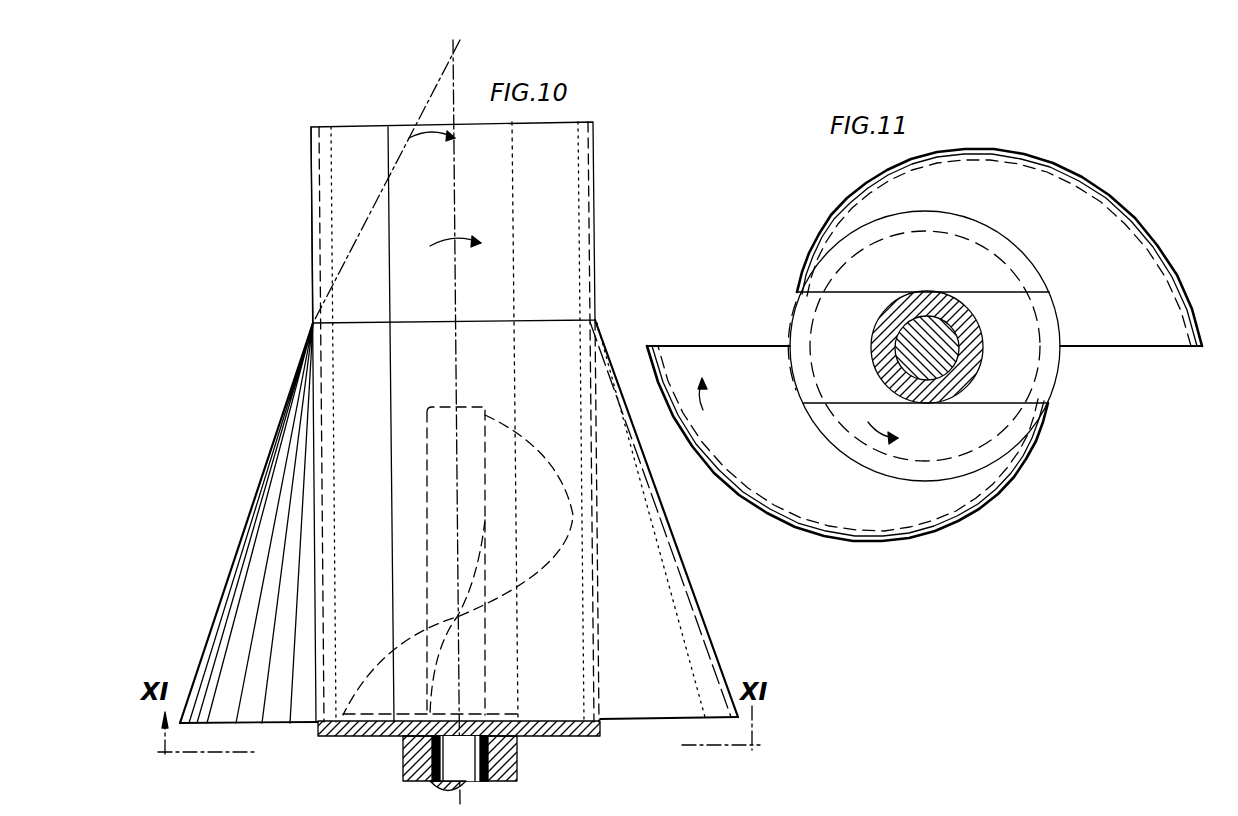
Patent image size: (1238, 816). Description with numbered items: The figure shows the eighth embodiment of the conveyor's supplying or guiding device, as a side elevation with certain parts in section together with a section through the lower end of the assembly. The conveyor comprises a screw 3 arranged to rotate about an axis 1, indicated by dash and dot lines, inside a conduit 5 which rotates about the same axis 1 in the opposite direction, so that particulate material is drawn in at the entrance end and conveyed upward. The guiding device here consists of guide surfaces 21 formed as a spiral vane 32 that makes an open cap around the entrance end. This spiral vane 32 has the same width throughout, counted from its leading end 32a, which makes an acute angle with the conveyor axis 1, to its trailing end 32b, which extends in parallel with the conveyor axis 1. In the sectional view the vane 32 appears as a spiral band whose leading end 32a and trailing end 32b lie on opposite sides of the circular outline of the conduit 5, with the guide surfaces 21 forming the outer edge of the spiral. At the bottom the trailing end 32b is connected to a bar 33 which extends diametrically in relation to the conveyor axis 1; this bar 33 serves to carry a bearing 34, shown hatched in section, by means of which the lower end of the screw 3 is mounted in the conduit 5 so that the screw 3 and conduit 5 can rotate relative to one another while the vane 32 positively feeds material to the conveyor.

In FIG. 10, the axis 1 is at (455, 182).
In FIG. 10, the screw 3 is at (525, 580).
In FIG. 11, the screw 3 is at (858, 438).
In FIG. 10, the conduit 5 is at (312, 190).
In FIG. 10, the guide surfaces 21 is at (260, 488).
In FIG. 11, the guide surfaces 21 is at (1090, 182).
In FIG. 10, the spiral vane 32 is at (246, 572).
In FIG. 11, the spiral vane 32 is at (1132, 212).
In FIG. 10, the leading end 32a is at (296, 385).
In FIG. 11, the leading end 32a is at (1200, 350).
In FIG. 11, the trailing end 32b is at (1052, 290).
In FIG. 10, the bar 33 is at (556, 738).
In FIG. 11, the bar 33 is at (1046, 406).
In FIG. 10, the bearing 34 is at (406, 755).
In FIG. 11, the bearing 34 is at (942, 401).